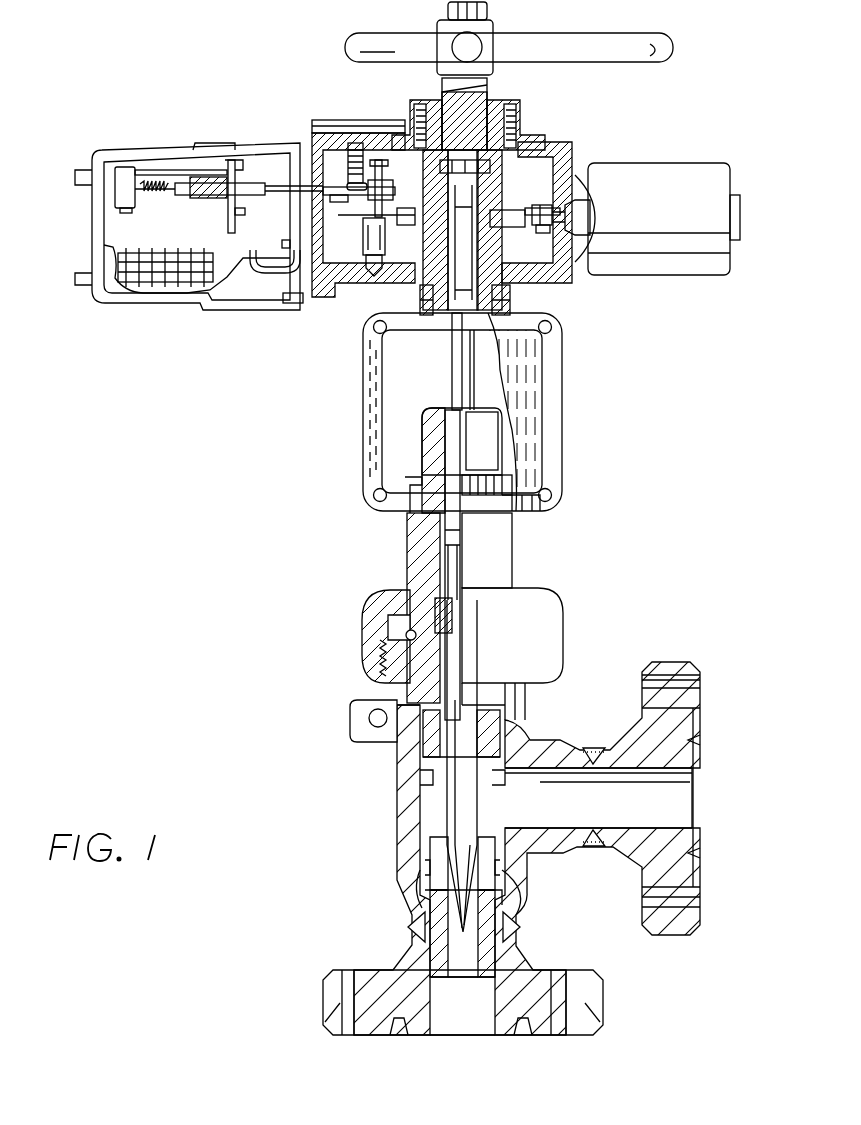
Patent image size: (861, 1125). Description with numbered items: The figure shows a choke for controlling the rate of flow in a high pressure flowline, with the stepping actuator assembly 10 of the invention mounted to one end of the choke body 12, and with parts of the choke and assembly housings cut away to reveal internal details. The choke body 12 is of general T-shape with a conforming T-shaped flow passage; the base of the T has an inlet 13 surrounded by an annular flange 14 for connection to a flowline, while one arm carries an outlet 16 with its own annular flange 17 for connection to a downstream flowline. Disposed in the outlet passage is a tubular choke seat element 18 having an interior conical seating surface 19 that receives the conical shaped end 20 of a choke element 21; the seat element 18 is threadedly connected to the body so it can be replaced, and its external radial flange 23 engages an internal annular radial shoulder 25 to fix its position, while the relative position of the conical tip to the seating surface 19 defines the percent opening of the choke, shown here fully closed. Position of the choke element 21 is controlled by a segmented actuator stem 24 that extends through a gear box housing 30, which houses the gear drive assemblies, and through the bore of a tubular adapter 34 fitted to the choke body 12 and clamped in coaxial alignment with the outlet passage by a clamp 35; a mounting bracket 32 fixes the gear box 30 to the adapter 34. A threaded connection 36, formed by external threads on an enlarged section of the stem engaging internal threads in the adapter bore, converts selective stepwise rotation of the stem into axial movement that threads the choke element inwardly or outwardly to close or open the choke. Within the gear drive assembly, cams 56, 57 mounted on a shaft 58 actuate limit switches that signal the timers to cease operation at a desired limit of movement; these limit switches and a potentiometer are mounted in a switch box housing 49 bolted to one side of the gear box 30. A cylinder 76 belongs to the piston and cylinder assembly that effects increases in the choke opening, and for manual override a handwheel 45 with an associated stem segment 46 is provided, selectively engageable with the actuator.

The stepping actuator assembly 10 is at (162, 30).
The choke body 12 is at (400, 778).
The inlet 13 is at (685, 798).
The annular flange 14 is at (672, 662).
The outlet 16 is at (463, 1020).
The annular flange 17 is at (325, 988).
The tubular choke seat element 18 is at (410, 930).
The conical seating surface 19 is at (476, 832).
The conical shaped end 20 is at (440, 898).
The choke element 21 is at (470, 788).
The external radial flange 23 is at (505, 890).
The segmented actuator stem 24 is at (430, 368).
The internal annular radial shoulder 25 is at (450, 878).
The gear box housing 30 is at (574, 178).
The mounting bracket 32 is at (560, 413).
The tubular adapter 34 is at (405, 558).
The clamp 35 is at (540, 610).
The threaded connection 36 is at (440, 440).
The handwheel 45 is at (545, 40).
The stem segment 46 is at (490, 88).
The switch box housing 49 is at (172, 283).
The cam 56 is at (180, 171).
The cam 57 is at (211, 178).
The shaft 58 is at (297, 185).
The cylinder 76 is at (675, 165).